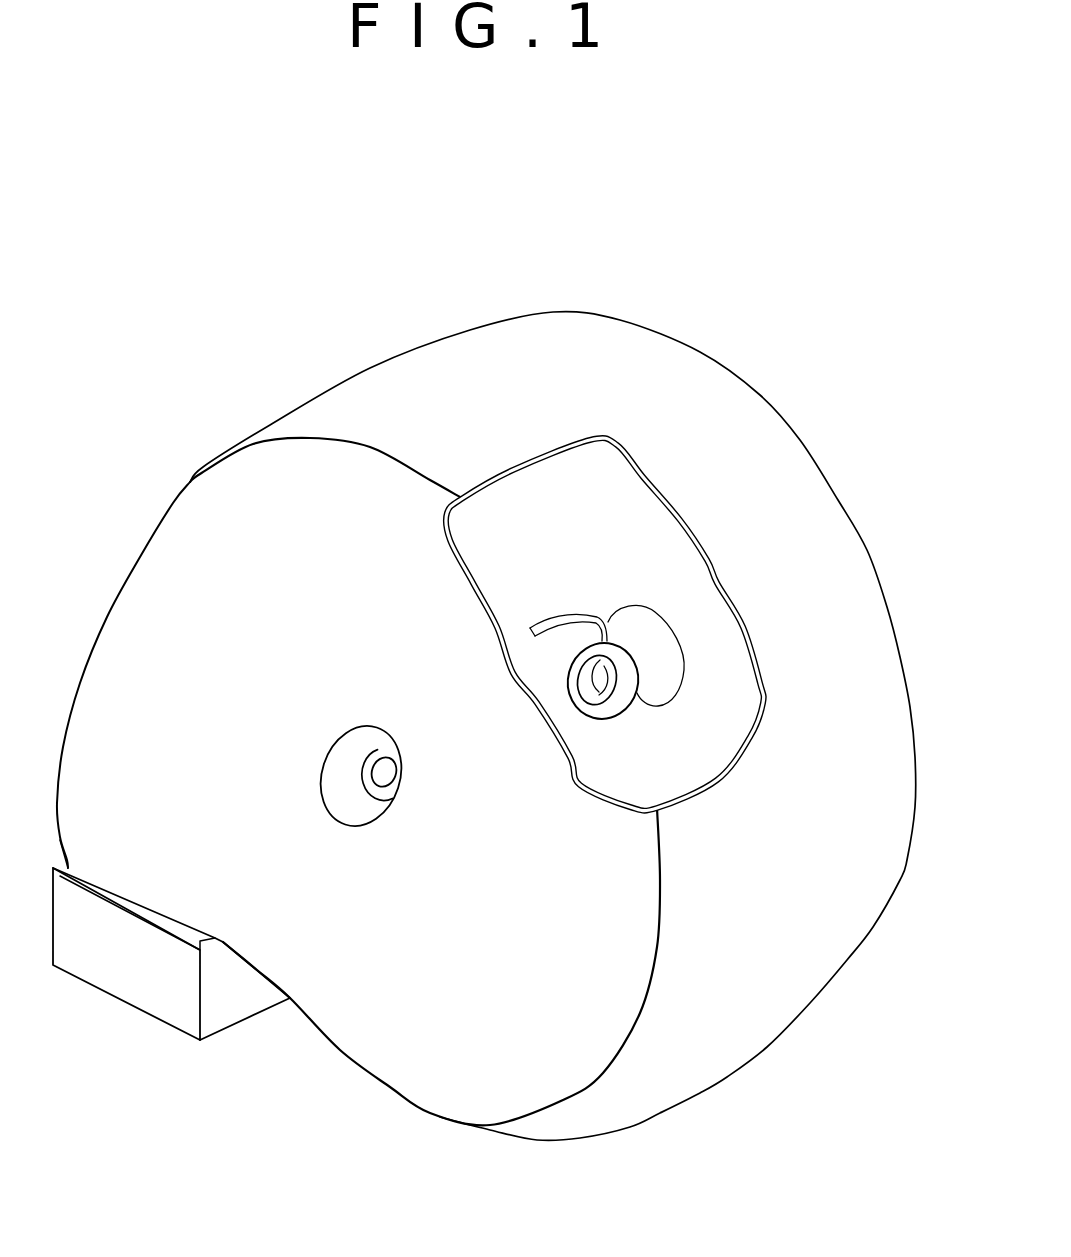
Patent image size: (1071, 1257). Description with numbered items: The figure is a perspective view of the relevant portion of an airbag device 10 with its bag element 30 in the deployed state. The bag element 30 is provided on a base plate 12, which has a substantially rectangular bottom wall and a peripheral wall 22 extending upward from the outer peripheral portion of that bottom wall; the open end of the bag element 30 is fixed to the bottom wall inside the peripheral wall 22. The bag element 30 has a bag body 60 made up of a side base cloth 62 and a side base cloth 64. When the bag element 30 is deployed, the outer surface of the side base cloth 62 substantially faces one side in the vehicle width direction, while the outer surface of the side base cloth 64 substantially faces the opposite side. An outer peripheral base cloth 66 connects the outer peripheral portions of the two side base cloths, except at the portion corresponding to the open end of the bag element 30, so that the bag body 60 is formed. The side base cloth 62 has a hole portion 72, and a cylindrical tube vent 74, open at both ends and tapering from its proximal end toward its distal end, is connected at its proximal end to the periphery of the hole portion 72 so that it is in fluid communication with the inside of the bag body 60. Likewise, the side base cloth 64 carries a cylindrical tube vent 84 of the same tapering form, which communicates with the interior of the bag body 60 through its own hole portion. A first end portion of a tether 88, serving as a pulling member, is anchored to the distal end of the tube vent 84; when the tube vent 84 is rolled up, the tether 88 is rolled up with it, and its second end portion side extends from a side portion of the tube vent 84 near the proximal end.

The airbag device 10 is at (484, 715).
The base plate 12 is at (171, 982).
The peripheral wall 22 is at (123, 980).
The bag element 30 is at (486, 748).
The bag body 60 is at (637, 1107).
The side base cloth 62 is at (400, 811).
The side base cloth 64 is at (723, 720).
The outer peripheral base cloth 66 is at (703, 1078).
The hole portion 72 is at (338, 806).
The tube vent 74 is at (347, 782).
The tube vent 84 is at (657, 704).
The tether 88 is at (537, 623).